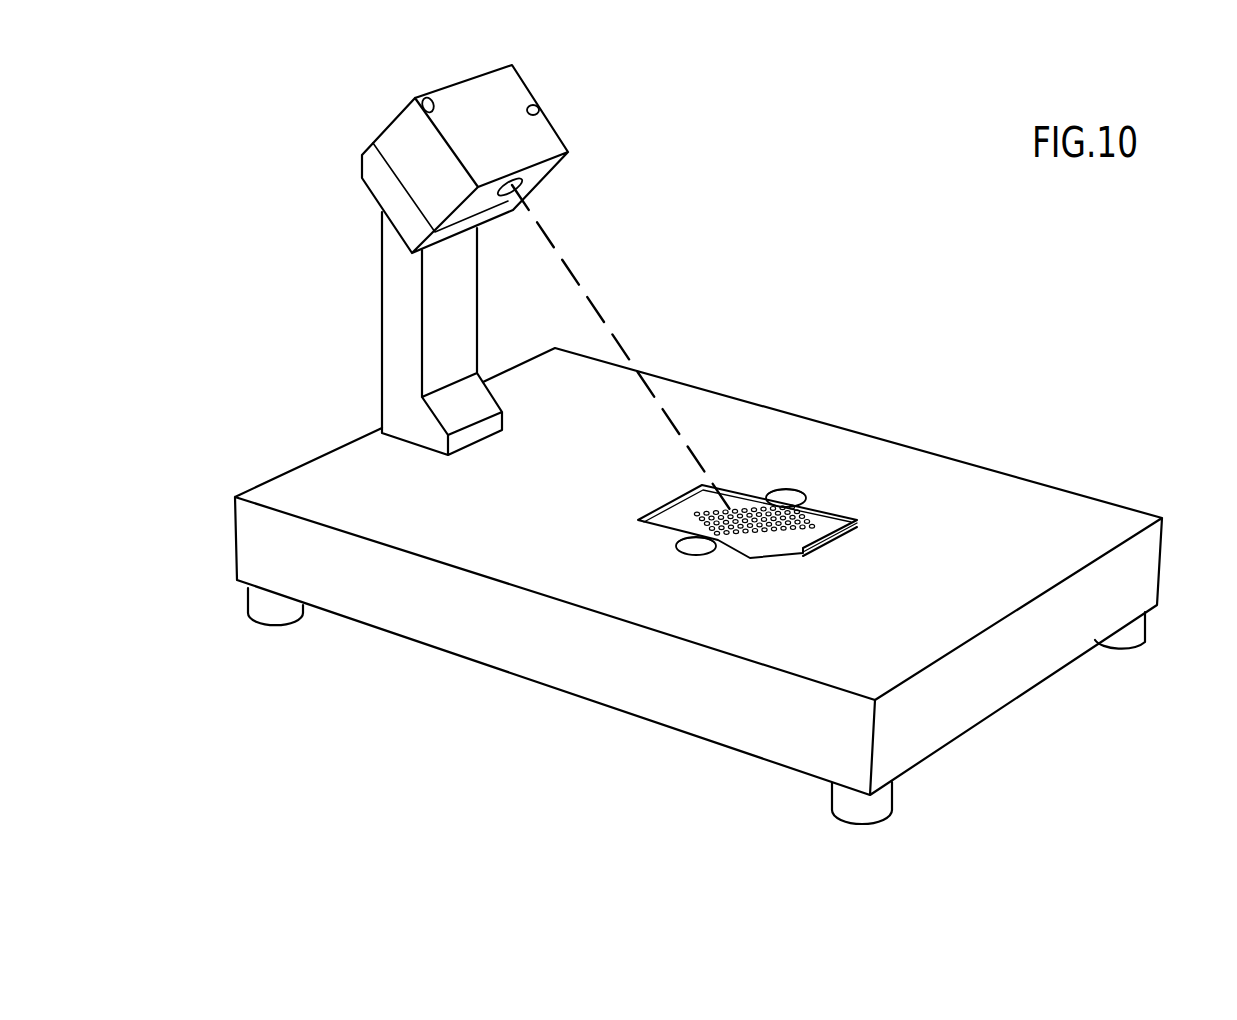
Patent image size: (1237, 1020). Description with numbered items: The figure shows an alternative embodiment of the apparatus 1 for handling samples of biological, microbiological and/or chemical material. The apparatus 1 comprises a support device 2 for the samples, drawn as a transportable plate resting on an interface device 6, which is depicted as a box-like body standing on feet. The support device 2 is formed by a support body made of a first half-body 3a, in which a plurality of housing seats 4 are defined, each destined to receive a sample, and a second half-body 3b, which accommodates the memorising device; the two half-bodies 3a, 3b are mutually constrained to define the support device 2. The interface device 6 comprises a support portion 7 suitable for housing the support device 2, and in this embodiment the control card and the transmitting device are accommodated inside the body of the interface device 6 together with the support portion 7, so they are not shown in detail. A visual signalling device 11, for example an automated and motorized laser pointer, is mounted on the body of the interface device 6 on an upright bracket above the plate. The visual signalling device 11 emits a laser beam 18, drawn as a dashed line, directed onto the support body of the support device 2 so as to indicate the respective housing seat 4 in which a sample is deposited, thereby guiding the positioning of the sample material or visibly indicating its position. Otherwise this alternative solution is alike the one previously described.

The apparatus 1 is at (988, 312).
The support device 2 is at (850, 505).
The first half-body 3a is at (677, 502).
The second half-body 3b is at (728, 543).
The housing seats 4 is at (740, 507).
The interface device 6 is at (776, 396).
The support portion 7 is at (840, 548).
The visual signalling device 11 is at (570, 131).
The laser beam 18 is at (566, 266).